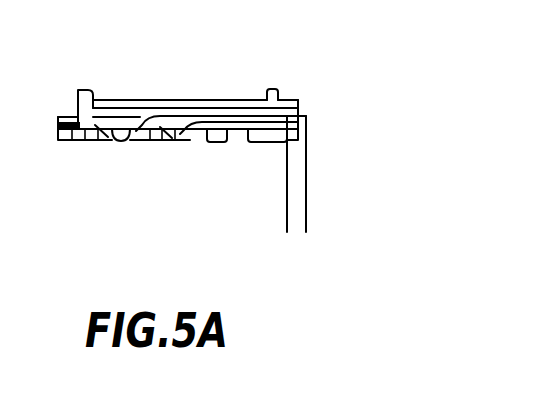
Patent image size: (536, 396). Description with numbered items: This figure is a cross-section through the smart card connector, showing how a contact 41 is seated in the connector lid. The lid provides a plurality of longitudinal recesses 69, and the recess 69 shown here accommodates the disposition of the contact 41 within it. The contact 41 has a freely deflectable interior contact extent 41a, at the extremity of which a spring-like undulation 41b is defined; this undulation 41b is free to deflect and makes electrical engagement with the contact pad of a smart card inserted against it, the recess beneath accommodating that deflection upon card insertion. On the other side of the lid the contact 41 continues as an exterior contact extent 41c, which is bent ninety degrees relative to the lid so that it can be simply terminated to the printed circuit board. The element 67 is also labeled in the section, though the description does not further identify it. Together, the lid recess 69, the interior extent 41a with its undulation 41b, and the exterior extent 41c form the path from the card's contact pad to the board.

The longitudinal recess 69 is at (101, 118).
The upper rail 67 is at (138, 106).
The contact 41 is at (200, 125).
The interior contact extent 41a is at (128, 141).
The spring-like undulation 41b is at (112, 141).
The exterior contact extent 41c is at (306, 195).